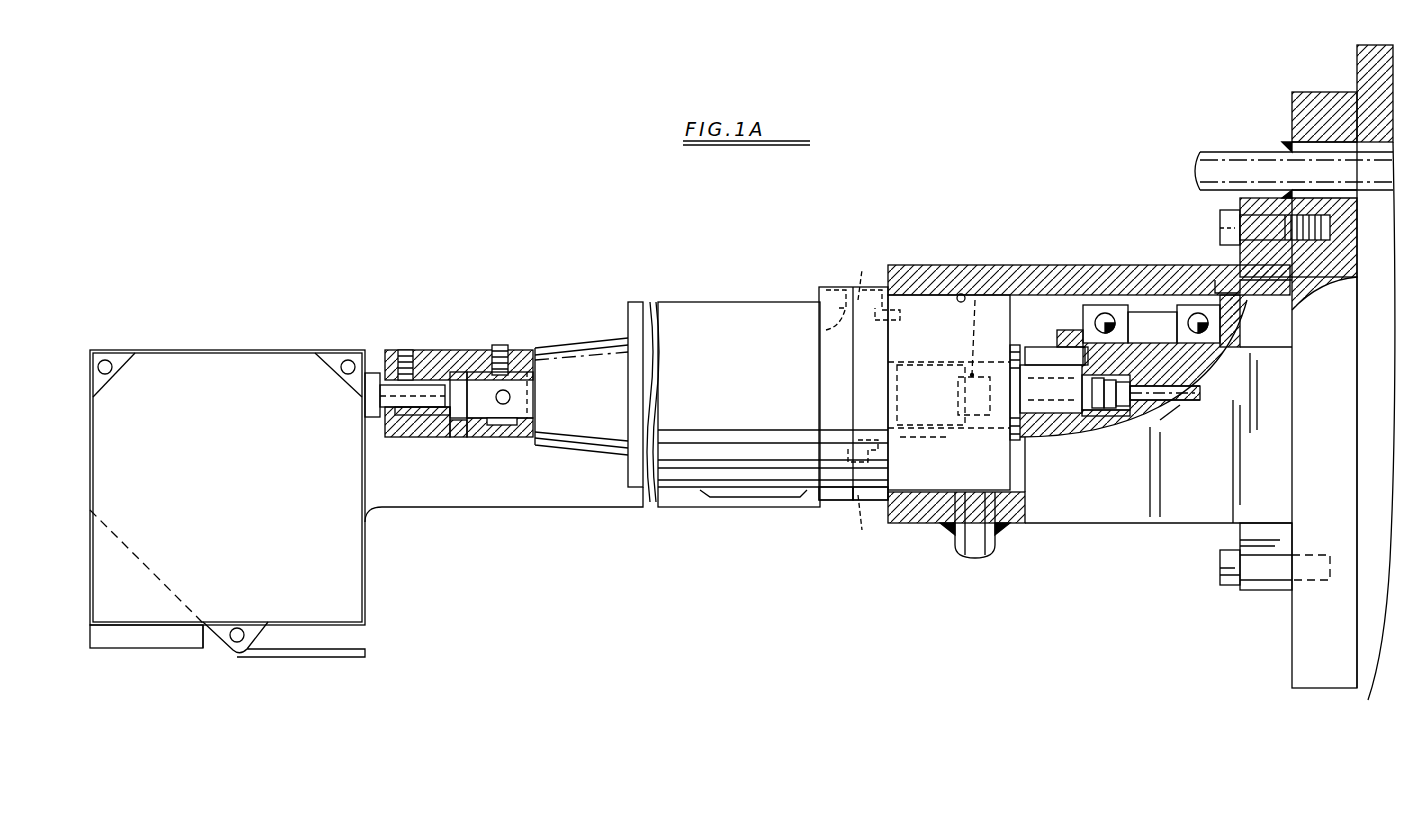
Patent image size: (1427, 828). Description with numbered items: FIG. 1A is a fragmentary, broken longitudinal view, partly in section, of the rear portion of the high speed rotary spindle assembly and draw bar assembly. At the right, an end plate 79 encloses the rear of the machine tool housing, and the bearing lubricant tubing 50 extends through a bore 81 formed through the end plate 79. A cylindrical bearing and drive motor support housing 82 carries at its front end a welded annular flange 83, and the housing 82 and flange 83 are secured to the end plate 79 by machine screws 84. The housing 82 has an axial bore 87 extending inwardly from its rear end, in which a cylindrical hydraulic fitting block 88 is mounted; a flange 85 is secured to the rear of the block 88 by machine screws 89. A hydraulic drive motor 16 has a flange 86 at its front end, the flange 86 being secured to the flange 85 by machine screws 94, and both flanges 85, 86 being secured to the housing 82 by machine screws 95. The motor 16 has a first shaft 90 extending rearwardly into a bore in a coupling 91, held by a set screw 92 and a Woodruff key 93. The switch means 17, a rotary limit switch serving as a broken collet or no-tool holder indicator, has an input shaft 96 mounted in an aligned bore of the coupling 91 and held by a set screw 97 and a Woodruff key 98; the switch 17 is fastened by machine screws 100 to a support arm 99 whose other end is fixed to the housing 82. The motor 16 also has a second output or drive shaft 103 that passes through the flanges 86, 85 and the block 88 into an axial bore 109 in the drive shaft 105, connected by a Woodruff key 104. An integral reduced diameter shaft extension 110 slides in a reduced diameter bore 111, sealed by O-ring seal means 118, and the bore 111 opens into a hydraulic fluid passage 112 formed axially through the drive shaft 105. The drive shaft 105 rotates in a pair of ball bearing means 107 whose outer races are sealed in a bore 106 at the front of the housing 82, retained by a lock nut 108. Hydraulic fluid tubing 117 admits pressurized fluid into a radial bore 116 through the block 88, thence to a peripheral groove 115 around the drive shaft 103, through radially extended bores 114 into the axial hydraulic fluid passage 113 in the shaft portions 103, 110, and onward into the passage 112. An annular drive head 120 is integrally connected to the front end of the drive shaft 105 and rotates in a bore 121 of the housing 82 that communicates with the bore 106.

The hydraulic drive motor 16 is at (706, 301).
The switch means 17 is at (240, 348).
The bearing lubricant tubing 50 is at (1236, 152).
The end plate 79 is at (1337, 100).
The bore 81 is at (1347, 152).
The bearing and drive motor support housing 82 is at (1118, 275).
The annular flange 83 is at (1246, 533).
The machine screws 84 is at (1222, 225).
The flange 85 is at (878, 500).
The flange 86 is at (830, 495).
The axial bore 87 is at (962, 294).
The hydraulic fitting block 88 is at (1000, 303).
The machine screws 89 is at (868, 270).
The first shaft 90 is at (512, 397).
The coupling 91 is at (455, 352).
The set screw 92 is at (501, 347).
The Woodruff key 93 is at (507, 425).
The machine screws 94 is at (830, 460).
The machine screws 95 is at (825, 331).
The input shaft 96 is at (377, 395).
The set screw 97 is at (406, 352).
The Woodruff key 98 is at (412, 418).
The support arm 99 is at (535, 507).
The machine screws 100 is at (108, 366).
The drive shaft 103 is at (1052, 430).
The Woodruff key 104 is at (1050, 352).
The drive shaft 105 is at (1177, 412).
The bore 106 is at (1152, 318).
The ball bearing means 107 is at (1192, 322).
The lock nut 108 is at (1073, 330).
The axial bore 109 is at (1018, 428).
The drive motor shaft extension 110 is at (1098, 420).
The reduced diameter bore 111 is at (1130, 412).
The hydraulic fluid passage 112 is at (1198, 390).
The axial hydraulic fluid passage 113 is at (1027, 380).
The radially extended bores 114 is at (1003, 300).
The peripheral groove 115 is at (972, 372).
The radial bore 116 is at (923, 437).
The hydraulic fluid tubing 117 is at (973, 560).
The O-ring seal means 118 is at (1105, 432).
The annular drive head 120 is at (1237, 321).
The bore 121 is at (1292, 302).